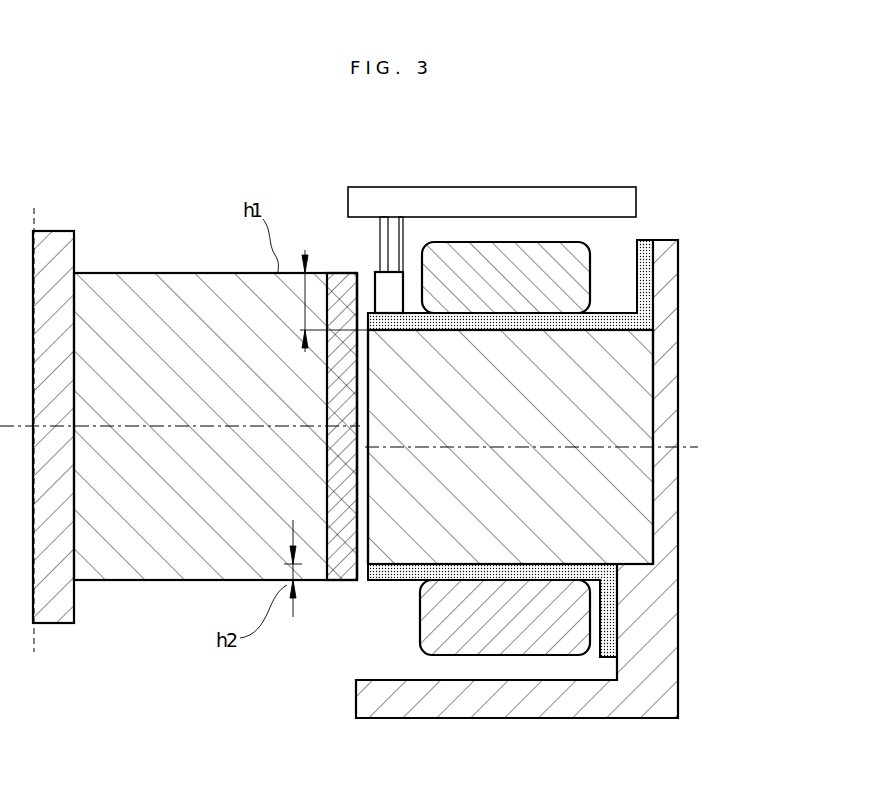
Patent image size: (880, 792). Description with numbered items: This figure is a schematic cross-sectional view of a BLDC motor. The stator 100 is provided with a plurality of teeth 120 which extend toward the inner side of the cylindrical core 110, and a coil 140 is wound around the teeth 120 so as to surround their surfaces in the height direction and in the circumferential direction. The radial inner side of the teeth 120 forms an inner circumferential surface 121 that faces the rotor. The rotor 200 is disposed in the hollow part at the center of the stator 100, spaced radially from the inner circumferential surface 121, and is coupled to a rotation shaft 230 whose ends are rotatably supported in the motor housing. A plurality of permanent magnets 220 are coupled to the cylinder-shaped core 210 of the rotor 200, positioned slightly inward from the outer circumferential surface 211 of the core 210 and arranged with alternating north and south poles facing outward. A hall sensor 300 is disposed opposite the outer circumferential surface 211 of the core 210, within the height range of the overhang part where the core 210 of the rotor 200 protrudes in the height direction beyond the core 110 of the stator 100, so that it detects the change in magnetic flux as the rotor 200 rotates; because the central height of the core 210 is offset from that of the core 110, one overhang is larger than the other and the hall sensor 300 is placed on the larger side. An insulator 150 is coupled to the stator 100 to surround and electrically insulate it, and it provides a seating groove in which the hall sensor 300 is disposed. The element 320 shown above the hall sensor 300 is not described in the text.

The stator 100 is at (563, 424).
The core 110 is at (628, 372).
The teeth 120 is at (490, 350).
The inner circumferential surface 121 is at (366, 350).
The coil 140 is at (543, 244).
The insulator 150 is at (648, 243).
The rotor 200 is at (223, 429).
The core 210 is at (125, 552).
The outer circumferential surface 211 is at (358, 545).
The permanent magnets 220 is at (330, 578).
The rotation shaft 230 is at (62, 231).
The hall sensor 300 is at (383, 262).
The circuit board 320 is at (608, 200).